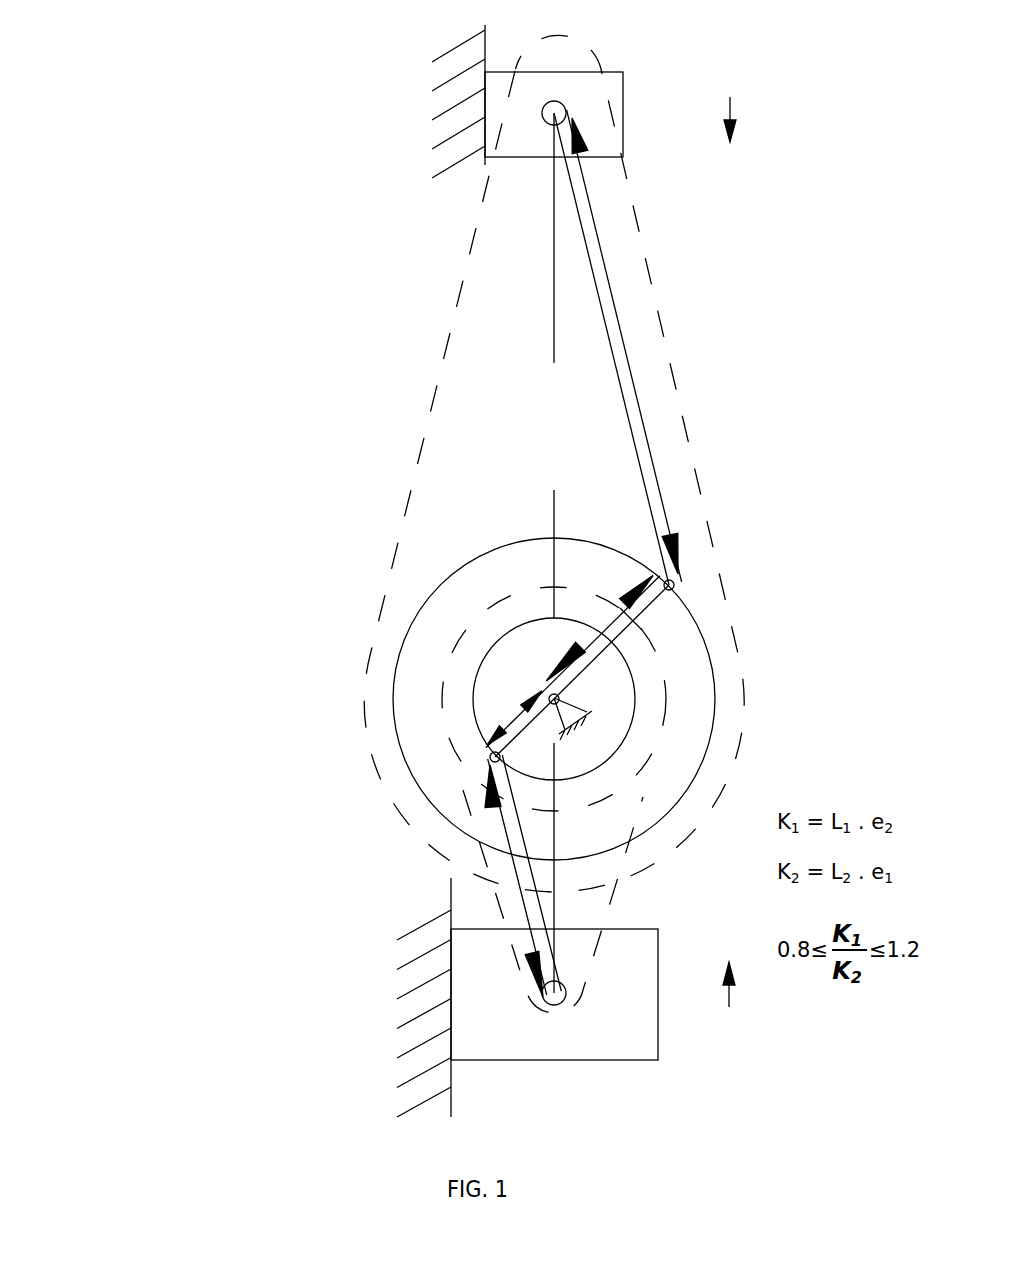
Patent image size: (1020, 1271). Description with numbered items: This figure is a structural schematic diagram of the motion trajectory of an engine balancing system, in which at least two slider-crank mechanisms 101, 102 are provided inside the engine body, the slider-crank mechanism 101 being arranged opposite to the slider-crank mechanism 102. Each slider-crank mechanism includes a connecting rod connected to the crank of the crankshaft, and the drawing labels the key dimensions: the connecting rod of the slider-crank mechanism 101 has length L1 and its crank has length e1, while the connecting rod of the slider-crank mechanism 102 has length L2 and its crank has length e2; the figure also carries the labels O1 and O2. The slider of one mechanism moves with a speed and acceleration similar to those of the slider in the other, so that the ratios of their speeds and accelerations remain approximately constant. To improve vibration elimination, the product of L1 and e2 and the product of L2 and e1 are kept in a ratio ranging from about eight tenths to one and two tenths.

The slider-crank mechanism 101 is at (453, 313).
The slider-crank mechanism 102 is at (335, 836).
The upper fixed pivot O1 is at (527, 101).
The lower fixed pivot O2 is at (527, 997).
The length of the connecting rod of the slider-crank mechanism 101 L1 is at (618, 350).
The length of the connecting rod of the slider-crank mechanism 102 L2 is at (523, 876).
The length of the crank of the slider-crank mechanism 101 e1 is at (607, 638).
The length of the crank of the slider-crank mechanism 102 e2 is at (516, 722).